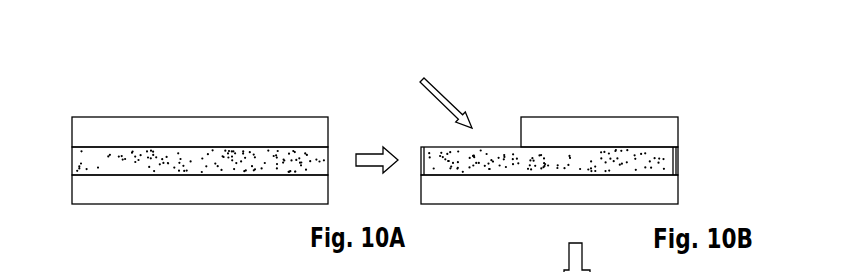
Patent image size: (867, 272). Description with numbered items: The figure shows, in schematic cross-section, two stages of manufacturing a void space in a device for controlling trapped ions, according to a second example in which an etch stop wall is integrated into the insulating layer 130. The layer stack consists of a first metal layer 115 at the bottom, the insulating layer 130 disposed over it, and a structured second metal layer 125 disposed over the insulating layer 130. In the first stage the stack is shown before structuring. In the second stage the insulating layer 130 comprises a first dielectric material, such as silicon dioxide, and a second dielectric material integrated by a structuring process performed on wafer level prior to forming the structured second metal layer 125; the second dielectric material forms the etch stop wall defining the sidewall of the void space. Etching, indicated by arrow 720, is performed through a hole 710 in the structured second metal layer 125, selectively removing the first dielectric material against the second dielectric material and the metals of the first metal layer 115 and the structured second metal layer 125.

In FIG. 10A, the first metal layer 115 is at (173, 193).
In FIG. 10B, the first metal layer 115 is at (540, 193).
In FIG. 10A, the structured second metal layer 125 is at (160, 127).
In FIG. 10B, the structured second metal layer 125 is at (613, 123).
In FIG. 10A, the insulating layer 130 is at (77, 155).
In FIG. 10B, the insulating layer 130 is at (753, 125).
In FIG. 10B, the hole 710 is at (503, 127).
In FIG. 10B, the arrow 720 is at (432, 82).